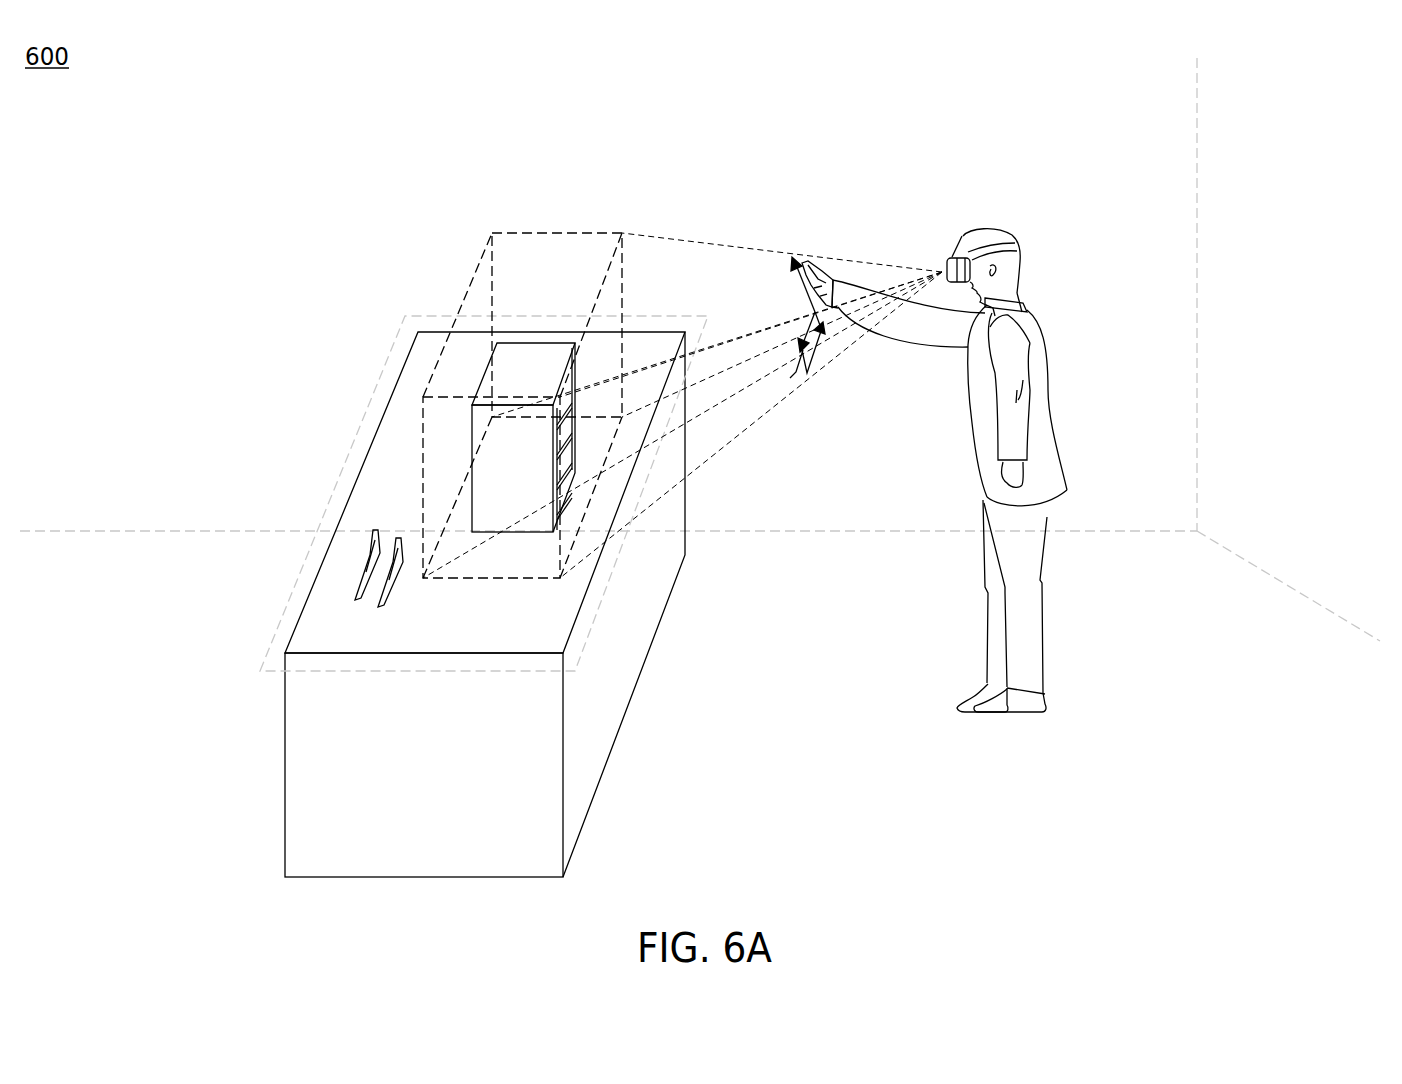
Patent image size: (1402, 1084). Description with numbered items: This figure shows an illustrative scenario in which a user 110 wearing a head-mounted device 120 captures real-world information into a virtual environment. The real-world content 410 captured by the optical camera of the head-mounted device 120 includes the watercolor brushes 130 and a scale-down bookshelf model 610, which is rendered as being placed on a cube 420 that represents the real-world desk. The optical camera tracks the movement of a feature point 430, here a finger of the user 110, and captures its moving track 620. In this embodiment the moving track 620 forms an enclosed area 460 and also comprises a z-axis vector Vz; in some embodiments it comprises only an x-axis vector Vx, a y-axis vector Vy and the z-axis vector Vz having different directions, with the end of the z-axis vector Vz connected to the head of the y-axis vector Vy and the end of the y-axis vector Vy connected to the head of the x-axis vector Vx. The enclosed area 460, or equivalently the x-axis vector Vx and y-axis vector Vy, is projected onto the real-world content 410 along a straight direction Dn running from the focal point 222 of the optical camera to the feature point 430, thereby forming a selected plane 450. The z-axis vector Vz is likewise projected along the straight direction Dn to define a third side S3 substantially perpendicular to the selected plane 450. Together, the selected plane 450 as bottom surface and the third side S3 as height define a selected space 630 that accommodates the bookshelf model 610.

The user 110 is at (1040, 333).
The head-mounted device (HMD) 120 is at (958, 257).
The watercolor brushes 130 is at (364, 562).
The focal point 222 is at (935, 258).
The real-world content 410 is at (283, 611).
The cube 420 is at (607, 763).
The feature point 430 is at (803, 262).
The selected plane 450 is at (574, 386).
The enclosed area 460 is at (813, 357).
The bookshelf model 610 is at (483, 373).
The moving track 620 is at (793, 328).
The selected space 630 is at (523, 248).
The third side S3 is at (630, 268).
The straight direction Dn is at (928, 274).
The x-axis vector Vx is at (800, 375).
The y-axis vector Vy is at (815, 362).
The z-axis vector Vz is at (784, 262).